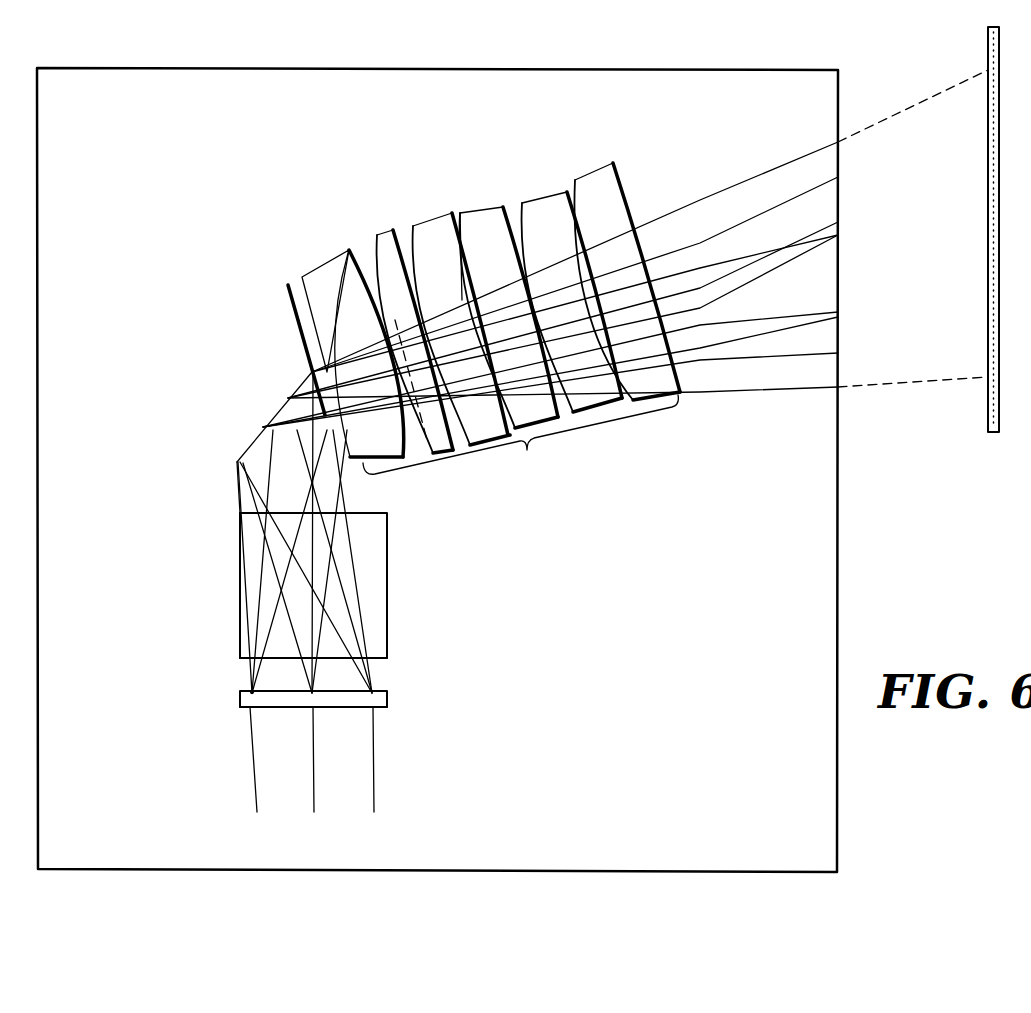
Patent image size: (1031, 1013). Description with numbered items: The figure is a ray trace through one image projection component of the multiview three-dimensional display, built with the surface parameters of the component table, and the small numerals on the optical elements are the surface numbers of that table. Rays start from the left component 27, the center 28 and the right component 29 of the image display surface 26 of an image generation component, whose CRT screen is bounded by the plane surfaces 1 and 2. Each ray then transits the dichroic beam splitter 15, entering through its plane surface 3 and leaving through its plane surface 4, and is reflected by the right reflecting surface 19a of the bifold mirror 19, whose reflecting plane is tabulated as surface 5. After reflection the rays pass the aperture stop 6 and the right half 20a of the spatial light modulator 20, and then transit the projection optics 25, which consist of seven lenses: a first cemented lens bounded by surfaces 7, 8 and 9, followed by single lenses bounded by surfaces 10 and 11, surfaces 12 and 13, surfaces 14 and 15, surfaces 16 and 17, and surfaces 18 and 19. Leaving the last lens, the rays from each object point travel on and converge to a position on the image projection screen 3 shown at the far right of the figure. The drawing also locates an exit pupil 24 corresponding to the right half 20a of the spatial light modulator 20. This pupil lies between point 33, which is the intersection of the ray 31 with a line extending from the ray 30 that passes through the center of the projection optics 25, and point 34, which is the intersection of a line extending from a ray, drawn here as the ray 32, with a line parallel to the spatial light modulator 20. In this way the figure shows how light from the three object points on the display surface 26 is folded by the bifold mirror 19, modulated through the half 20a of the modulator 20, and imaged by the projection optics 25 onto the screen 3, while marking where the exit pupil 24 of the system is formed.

The CRT screen front surface 1 is at (333, 708).
The CRT screen rear surface 2 is at (350, 693).
The screen 3 is at (988, 47).
The dichroic beam splitter exit surface 4 is at (353, 514).
The bifold mirror surface 5 is at (298, 387).
The aperture stop 6 is at (302, 342).
The first lens front surface 7 is at (293, 286).
The first lens cemented surface 8 is at (337, 282).
The first lens rear surface 9 is at (349, 248).
The second lens front surface 10 is at (376, 243).
The second lens rear surface 11 is at (396, 240).
The third lens front surface 12 is at (412, 240).
The third lens rear surface 13 is at (448, 225).
The fourth lens front surface 14 is at (458, 220).
The dichroic beam splitter 15 is at (240, 600).
The fifth lens front surface 16 is at (516, 214).
The fifth lens rear surface 17 is at (560, 200).
The sixth lens front surface 18 is at (587, 198).
The bifold mirror 19 is at (625, 187).
The right reflecting surface 19a is at (266, 423).
The spatial light modulator 20 is at (288, 285).
The right half of the spatial light modulator 20a is at (347, 452).
The exit pupil 24 is at (394, 332).
The projection optics 25 is at (520, 440).
The image display surface 26 is at (250, 706).
The left component 27 is at (257, 812).
The center 28 is at (314, 810).
The right component 29 is at (373, 810).
The ray 30 is at (838, 235).
The ray 31 is at (838, 142).
The light ray 32 is at (838, 313).
The point 33 is at (488, 438).
The point 34 is at (434, 456).